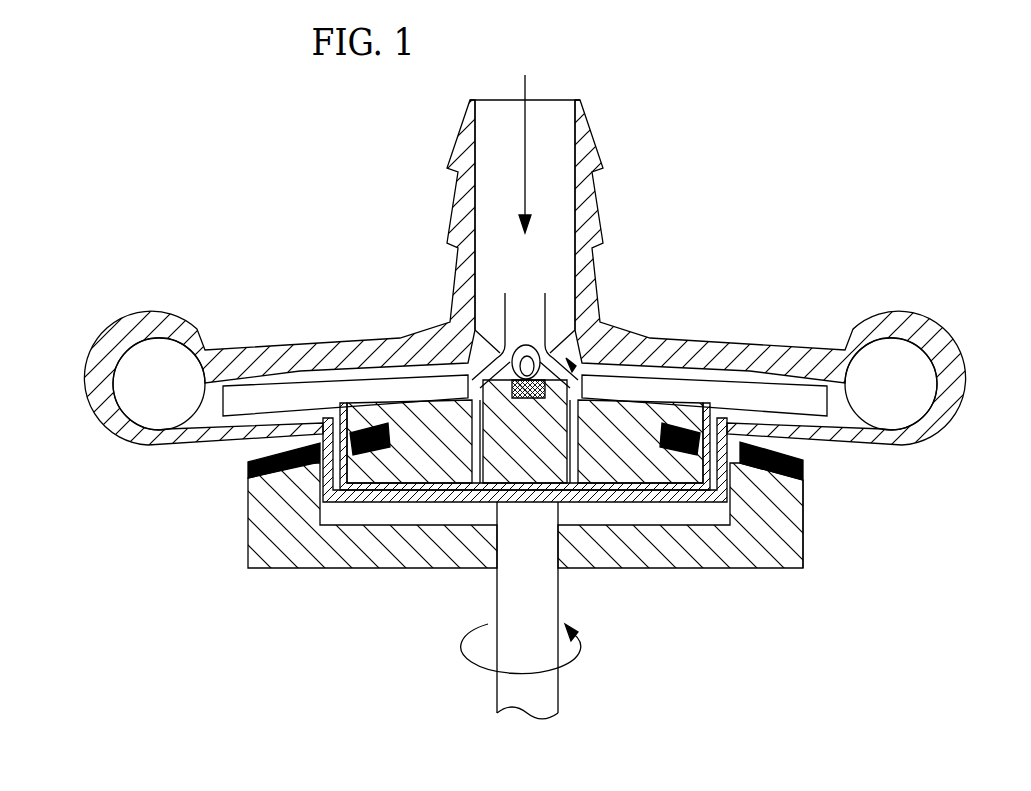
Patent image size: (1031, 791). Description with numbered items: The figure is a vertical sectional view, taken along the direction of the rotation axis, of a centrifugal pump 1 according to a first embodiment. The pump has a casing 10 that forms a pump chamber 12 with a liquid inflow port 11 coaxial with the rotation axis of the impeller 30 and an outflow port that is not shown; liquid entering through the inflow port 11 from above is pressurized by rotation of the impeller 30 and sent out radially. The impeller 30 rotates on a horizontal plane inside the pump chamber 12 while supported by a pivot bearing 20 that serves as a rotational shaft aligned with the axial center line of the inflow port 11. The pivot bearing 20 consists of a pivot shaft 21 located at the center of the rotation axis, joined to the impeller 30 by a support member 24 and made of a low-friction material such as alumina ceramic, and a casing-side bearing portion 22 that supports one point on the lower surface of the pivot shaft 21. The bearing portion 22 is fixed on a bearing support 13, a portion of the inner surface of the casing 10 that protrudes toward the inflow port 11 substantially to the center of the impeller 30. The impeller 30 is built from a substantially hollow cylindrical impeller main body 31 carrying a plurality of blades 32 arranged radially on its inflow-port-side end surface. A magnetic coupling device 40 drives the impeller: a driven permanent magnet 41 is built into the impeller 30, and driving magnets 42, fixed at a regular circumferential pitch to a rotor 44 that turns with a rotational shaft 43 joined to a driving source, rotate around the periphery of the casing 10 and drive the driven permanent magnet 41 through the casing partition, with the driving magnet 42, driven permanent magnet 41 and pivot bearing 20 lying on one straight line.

The centrifugal pump 1 is at (821, 125).
The casing 10 is at (775, 342).
The liquid inflow port 11 is at (556, 125).
The pump chamber 12 is at (927, 388).
The bearing support 13 is at (460, 400).
The pivot bearing 20 is at (558, 342).
The pivot shaft 21 is at (518, 343).
The bearing portion 22 is at (481, 362).
The support member 24 is at (592, 403).
The impeller 30 is at (386, 468).
The impeller main body 31 is at (663, 492).
The blades 32 is at (240, 395).
The magnetic coupling device 40 is at (775, 568).
The driven permanent magnet 41 is at (356, 436).
The driving magnet 42 is at (250, 467).
The rotational shaft 43 is at (552, 693).
The rotor 44 is at (805, 533).